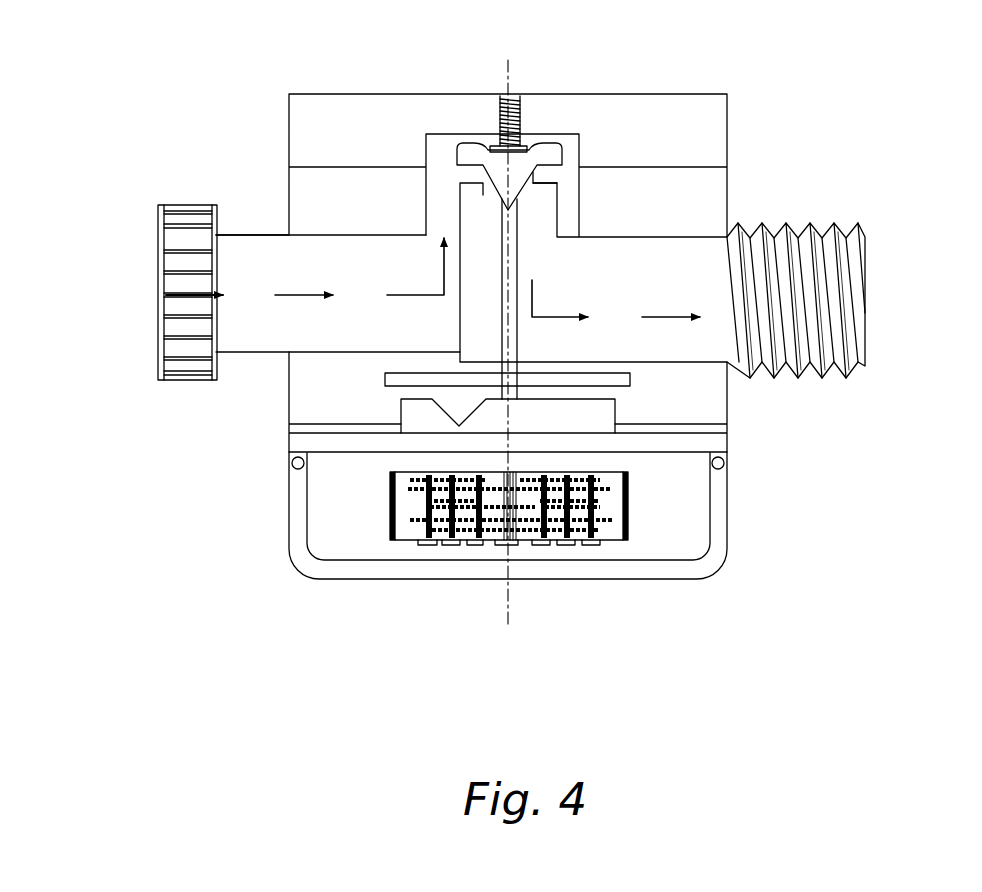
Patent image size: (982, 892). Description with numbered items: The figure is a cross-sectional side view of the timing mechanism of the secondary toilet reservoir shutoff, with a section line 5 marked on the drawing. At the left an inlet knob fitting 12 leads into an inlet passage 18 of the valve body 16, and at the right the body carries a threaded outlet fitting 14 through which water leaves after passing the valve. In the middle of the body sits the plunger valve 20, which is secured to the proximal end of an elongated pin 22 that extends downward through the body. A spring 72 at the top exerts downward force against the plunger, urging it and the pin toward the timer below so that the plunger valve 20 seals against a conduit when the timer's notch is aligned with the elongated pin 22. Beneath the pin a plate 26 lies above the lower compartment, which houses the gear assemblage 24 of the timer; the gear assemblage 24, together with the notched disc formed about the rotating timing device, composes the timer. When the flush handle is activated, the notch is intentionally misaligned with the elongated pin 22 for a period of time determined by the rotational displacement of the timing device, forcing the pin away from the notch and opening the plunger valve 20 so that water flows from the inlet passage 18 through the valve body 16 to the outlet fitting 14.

The inlet knob fitting 12 is at (158, 288).
The threaded outlet fitting 14 is at (865, 297).
The valve body 16 is at (727, 410).
The inlet passage 18 is at (280, 250).
The plunger valve 20 is at (553, 148).
The elongated pin 22 is at (515, 255).
The gear assemblage 24 is at (492, 540).
The plate 26 is at (500, 389).
The spring 72 is at (498, 97).
The section line 5- 5 is at (512, 72).